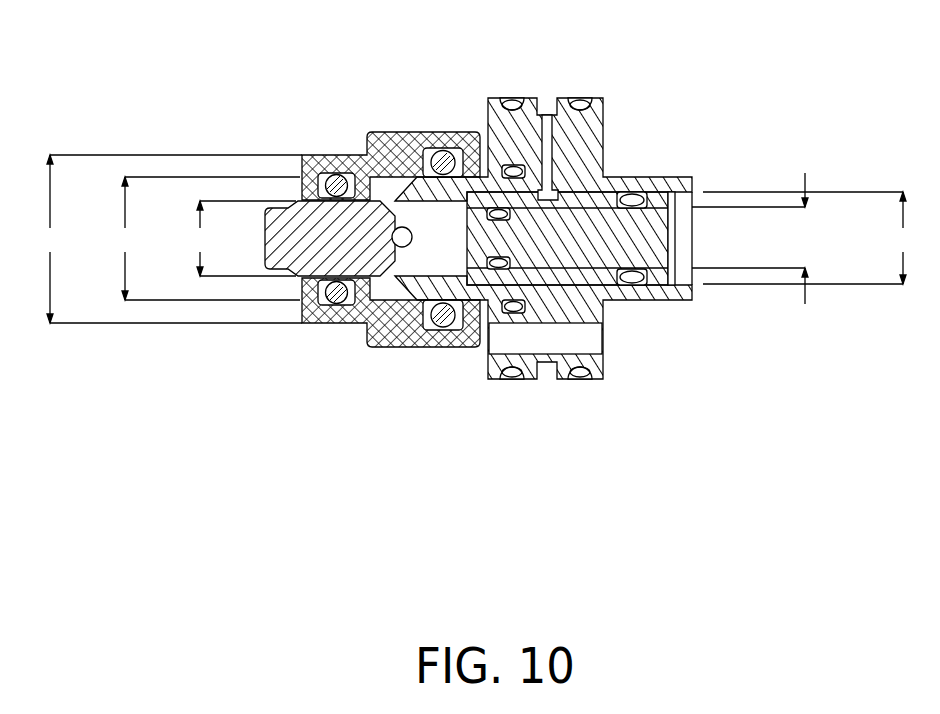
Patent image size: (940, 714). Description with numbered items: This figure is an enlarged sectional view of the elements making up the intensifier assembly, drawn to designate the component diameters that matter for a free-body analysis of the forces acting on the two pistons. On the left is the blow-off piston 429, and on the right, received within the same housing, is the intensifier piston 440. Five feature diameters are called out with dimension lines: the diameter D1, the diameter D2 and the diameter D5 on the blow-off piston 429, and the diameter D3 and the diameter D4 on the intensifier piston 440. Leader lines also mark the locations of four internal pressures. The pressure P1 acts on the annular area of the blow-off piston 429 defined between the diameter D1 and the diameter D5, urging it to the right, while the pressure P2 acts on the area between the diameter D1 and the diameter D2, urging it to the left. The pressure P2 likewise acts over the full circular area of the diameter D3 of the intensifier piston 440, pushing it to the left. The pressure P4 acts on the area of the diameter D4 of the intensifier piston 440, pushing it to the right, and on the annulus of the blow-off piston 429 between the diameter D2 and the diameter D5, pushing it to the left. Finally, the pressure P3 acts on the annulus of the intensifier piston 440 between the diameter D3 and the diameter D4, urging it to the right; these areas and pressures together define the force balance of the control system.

The blow-off piston 429 is at (405, 175).
The intensifier piston 440 is at (588, 242).
The pressure P1 is at (295, 300).
The pressure P2 is at (410, 357).
The pressure P3 is at (547, 197).
The pressure P4 is at (420, 223).
The diameter D1 is at (170, 239).
The diameter D2 is at (206, 238).
The diameter D3 is at (810, 238).
The diameter D4 is at (755, 238).
The diameter D5 is at (241, 238).